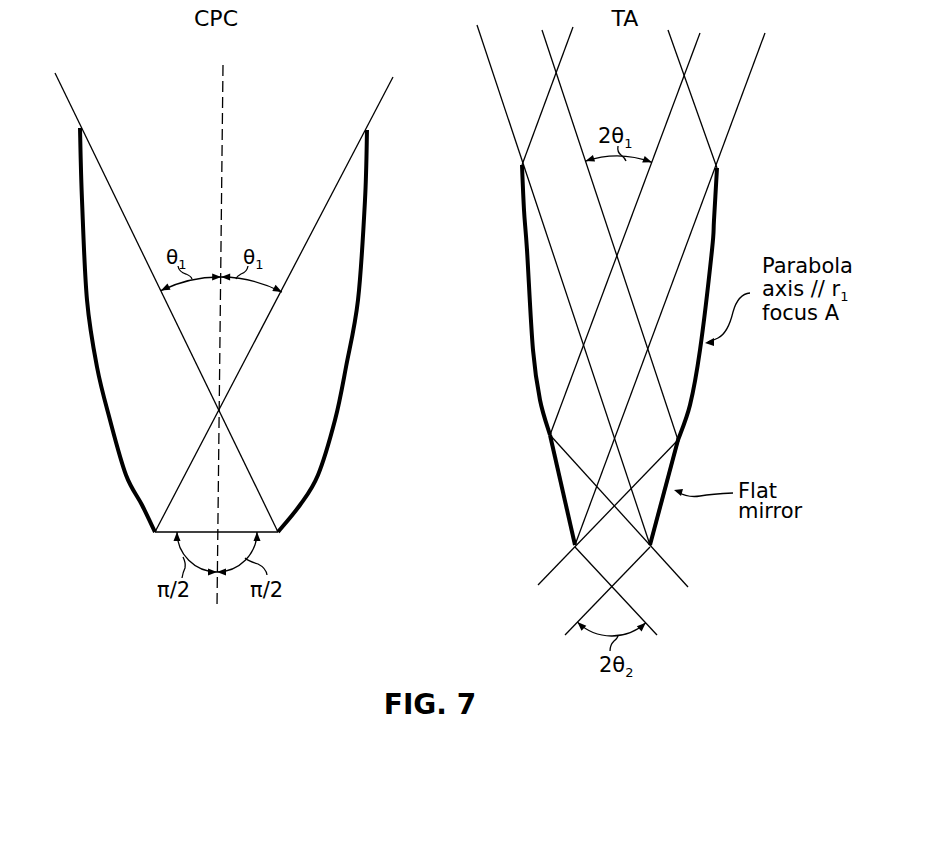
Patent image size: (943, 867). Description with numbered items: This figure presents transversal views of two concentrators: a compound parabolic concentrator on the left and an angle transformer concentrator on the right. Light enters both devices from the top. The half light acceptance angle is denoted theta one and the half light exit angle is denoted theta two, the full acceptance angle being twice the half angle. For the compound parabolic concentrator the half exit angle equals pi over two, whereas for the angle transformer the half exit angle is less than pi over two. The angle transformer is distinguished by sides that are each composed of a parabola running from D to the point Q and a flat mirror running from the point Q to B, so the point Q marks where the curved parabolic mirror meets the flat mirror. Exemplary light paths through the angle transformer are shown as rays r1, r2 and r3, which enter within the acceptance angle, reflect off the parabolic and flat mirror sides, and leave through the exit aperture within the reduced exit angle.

The exemplary light path r1 is at (497, 82).
The exemplary light path r2 is at (546, 42).
The exemplary light path r3 is at (671, 40).
The junction point of parabola and flat mirror Q is at (684, 442).